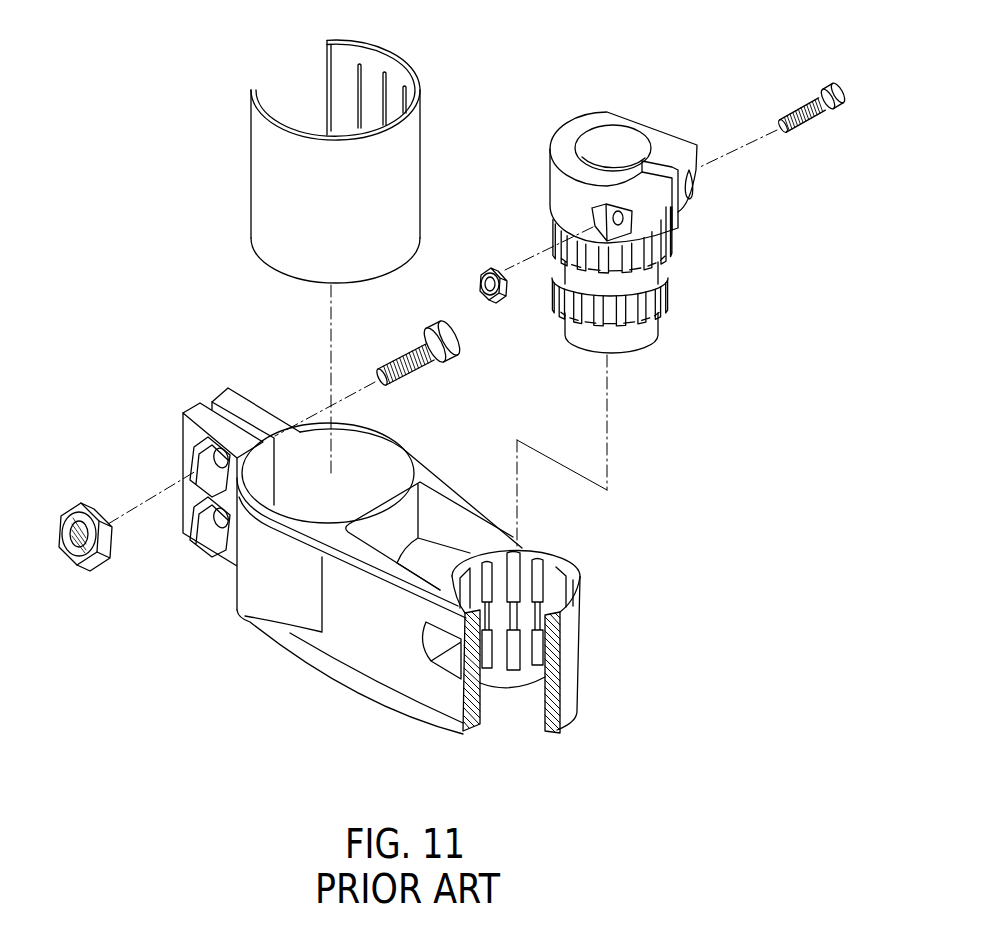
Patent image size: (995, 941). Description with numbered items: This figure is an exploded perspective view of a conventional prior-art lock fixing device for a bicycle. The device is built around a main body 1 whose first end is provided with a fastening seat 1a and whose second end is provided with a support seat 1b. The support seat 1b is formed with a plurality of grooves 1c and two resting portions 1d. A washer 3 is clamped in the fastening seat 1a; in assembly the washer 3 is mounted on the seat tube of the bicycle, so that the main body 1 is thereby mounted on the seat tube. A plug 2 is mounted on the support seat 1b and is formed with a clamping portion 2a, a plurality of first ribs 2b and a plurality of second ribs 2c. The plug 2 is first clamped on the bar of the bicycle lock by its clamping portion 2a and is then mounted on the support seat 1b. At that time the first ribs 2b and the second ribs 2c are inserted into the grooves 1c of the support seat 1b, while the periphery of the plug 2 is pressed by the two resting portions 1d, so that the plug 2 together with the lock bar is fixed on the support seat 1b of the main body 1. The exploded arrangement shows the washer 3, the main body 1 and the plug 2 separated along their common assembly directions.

The main body 1 is at (423, 544).
The fastening seat 1a is at (288, 427).
The support seat 1b is at (580, 577).
The grooves 1c is at (542, 563).
The resting portions 1d is at (549, 700).
The plug 2 is at (658, 189).
The clamping portion 2a is at (600, 121).
The first ribs 2b is at (665, 256).
The second ribs 2c is at (665, 305).
The washer 3 is at (425, 188).